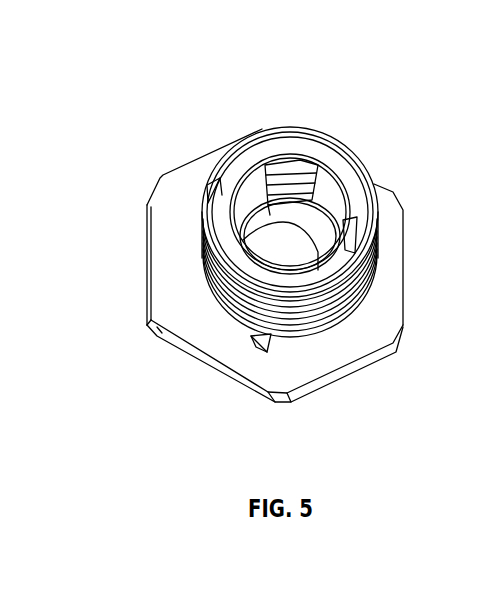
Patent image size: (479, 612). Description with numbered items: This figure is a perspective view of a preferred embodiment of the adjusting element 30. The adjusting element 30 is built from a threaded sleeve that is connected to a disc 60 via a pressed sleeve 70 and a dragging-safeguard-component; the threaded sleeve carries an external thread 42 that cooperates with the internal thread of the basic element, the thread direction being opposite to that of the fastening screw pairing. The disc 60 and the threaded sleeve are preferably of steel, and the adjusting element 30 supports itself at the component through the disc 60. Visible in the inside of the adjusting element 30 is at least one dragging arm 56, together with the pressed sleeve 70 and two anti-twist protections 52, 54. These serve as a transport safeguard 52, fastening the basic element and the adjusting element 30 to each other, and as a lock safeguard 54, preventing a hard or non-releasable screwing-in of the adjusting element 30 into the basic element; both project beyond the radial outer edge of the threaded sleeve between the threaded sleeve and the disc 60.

The adjusting element 30 is at (257, 256).
The external thread 42 is at (300, 308).
The transport safeguard 52 is at (207, 192).
The lock safeguard 54 is at (252, 343).
The dragging arm 56 is at (278, 168).
The disc 60 is at (175, 308).
The pressed sleeve 70 is at (300, 225).